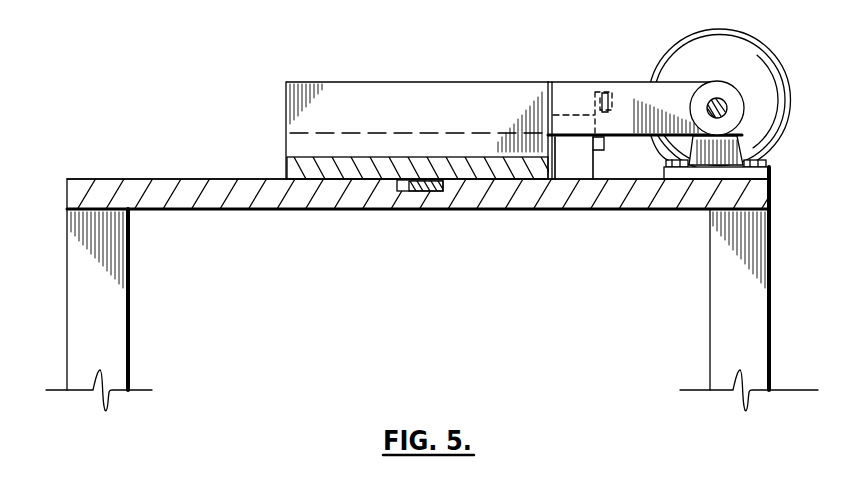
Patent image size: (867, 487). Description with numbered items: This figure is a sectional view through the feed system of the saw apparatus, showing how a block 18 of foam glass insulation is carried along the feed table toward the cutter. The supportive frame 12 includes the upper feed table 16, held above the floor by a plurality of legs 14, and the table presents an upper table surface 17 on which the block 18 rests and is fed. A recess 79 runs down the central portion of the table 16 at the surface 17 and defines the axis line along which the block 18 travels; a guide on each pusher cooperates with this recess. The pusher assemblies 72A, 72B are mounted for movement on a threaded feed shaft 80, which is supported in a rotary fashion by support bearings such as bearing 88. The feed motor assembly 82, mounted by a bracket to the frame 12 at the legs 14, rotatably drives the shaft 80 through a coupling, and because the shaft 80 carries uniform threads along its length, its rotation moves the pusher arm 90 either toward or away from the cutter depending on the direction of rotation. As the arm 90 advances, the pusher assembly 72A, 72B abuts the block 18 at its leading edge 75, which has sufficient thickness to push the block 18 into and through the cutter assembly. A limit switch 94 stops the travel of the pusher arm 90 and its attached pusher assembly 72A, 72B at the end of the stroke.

The supportive frame 12 is at (771, 203).
The legs 14 is at (112, 255).
The upper feed table 16 is at (97, 190).
The upper table surface 17 is at (174, 175).
The block 18 is at (444, 113).
The pusher assembly 72A is at (288, 167).
The pusher assembly 72B is at (417, 168).
The leading edge 75 is at (402, 183).
The recess 79 is at (427, 191).
The threaded feed shaft 80 is at (721, 100).
The feed motor assembly 82 is at (755, 84).
The support bearing 88 is at (723, 146).
The pusher arm 90 is at (637, 82).
The limit switch 94 is at (605, 90).